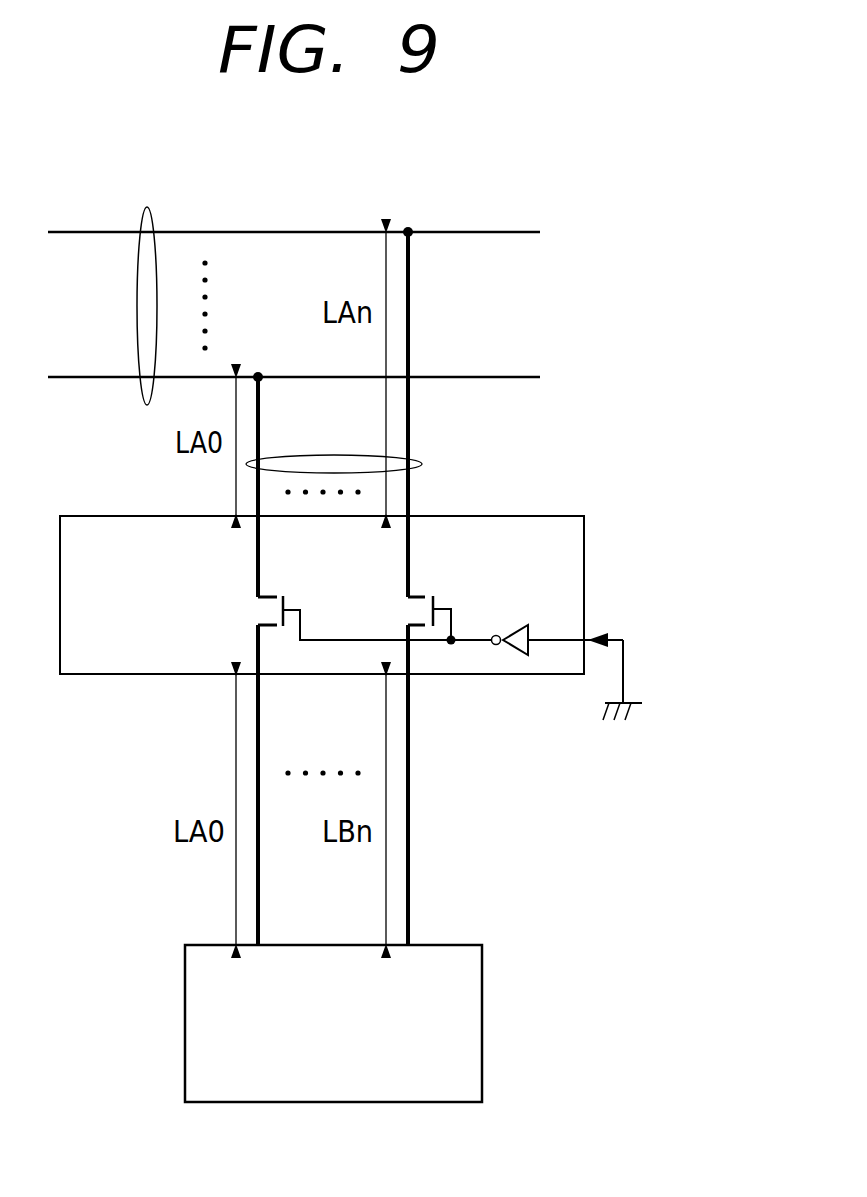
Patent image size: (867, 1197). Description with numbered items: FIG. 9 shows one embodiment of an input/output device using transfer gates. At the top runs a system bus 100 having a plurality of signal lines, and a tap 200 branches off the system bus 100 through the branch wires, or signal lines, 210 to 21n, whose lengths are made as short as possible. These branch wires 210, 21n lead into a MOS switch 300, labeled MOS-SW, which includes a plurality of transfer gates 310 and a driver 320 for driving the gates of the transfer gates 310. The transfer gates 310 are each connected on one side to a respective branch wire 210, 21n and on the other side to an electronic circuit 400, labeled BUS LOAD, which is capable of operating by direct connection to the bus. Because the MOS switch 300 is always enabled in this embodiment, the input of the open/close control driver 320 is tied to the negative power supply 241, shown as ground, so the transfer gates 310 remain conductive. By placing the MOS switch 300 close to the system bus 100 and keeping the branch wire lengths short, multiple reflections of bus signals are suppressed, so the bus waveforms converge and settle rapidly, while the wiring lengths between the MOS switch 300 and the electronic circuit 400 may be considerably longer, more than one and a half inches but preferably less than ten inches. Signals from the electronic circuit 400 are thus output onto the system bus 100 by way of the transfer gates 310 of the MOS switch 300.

The system bus 100 is at (156, 221).
The tap 200 is at (422, 465).
The branch wire 210 is at (260, 412).
The branch wire 21n is at (410, 412).
The MOS switch 300 is at (112, 515).
The transfer gate 310 is at (268, 596).
The driver 320 is at (513, 648).
The negative power supply section 241 is at (632, 700).
The electronic circuit 400 is at (482, 973).